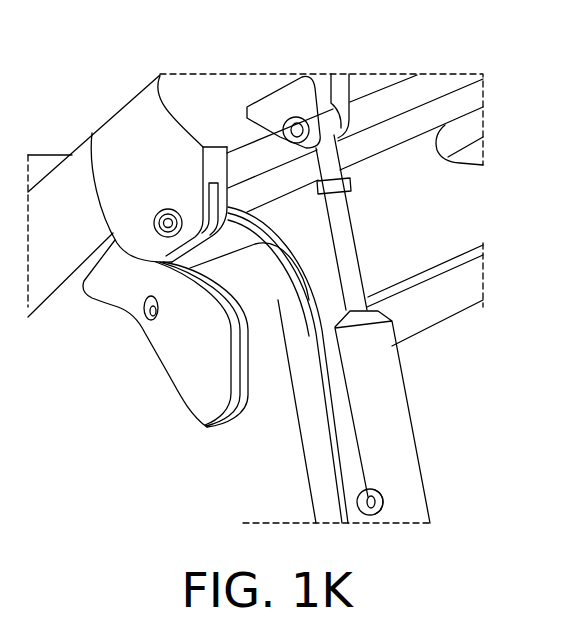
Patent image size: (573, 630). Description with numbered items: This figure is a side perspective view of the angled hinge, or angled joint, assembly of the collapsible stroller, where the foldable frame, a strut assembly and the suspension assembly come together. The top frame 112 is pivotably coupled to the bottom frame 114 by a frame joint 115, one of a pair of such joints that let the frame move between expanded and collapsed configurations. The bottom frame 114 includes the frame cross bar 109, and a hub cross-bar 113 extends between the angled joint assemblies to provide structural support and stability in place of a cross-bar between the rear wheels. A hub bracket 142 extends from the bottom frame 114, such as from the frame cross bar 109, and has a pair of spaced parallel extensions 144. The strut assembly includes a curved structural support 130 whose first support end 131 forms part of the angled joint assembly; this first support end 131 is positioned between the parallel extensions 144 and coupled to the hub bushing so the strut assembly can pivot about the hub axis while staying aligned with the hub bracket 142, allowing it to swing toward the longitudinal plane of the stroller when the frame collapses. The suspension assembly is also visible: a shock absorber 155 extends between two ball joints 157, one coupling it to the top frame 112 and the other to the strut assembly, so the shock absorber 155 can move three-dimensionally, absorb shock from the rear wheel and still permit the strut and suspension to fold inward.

The frame cross bar 109 is at (400, 100).
The top frame 112 is at (198, 97).
The hub cross-bar 113 is at (448, 307).
The bottom frame 114 is at (67, 198).
The frame joint 115 is at (122, 102).
The structural support 130 is at (253, 507).
The first support end 131 is at (261, 405).
The hub bracket 142 is at (140, 344).
The parallel extensions 144 is at (177, 388).
The shock absorber 155 is at (403, 462).
The ball joint 157 is at (287, 98).